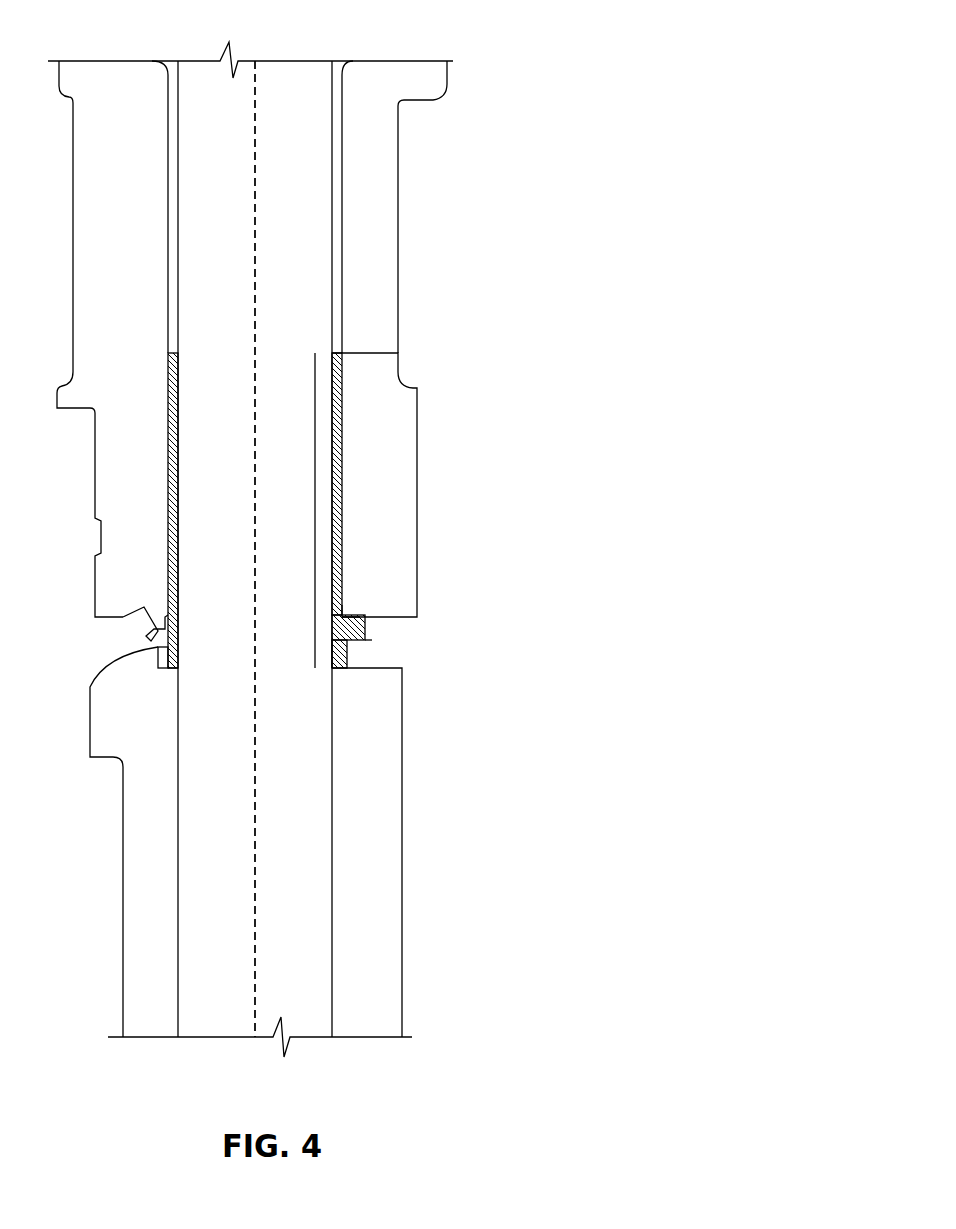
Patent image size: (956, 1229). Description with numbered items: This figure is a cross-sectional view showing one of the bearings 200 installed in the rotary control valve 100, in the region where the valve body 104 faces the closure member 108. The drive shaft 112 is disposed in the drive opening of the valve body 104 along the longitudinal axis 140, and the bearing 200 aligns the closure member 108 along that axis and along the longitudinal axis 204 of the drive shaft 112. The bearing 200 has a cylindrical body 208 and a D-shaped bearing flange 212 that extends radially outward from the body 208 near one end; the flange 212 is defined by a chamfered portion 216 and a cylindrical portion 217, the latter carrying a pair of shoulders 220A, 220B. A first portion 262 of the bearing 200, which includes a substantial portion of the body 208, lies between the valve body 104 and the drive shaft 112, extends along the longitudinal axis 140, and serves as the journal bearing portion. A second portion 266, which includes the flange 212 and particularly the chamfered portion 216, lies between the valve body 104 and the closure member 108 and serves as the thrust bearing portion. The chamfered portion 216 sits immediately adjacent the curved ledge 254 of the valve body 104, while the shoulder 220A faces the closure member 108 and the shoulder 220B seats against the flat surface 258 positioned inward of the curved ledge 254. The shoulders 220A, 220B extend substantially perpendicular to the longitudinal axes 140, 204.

The rotary control valve 100 is at (522, 97).
The valve body 104 is at (430, 473).
The closure member 108 is at (404, 871).
The drive shaft 112 is at (336, 241).
The longitudinal axis 140 is at (312, 527).
The longitudinal axis of the drive shaft 204 is at (260, 78).
The bearing 200 is at (358, 510).
The cylindrical body 208 is at (342, 413).
The bearing flange 212 is at (373, 640).
The chamfered portion 216 is at (168, 652).
The cylindrical portion 217 is at (328, 640).
The shoulder 220A is at (345, 645).
The shoulder 220B is at (366, 623).
The curved ledge 254 is at (153, 621).
The flat surface 258 is at (343, 616).
The first portion 262 is at (320, 353).
The second portion 266 is at (320, 615).